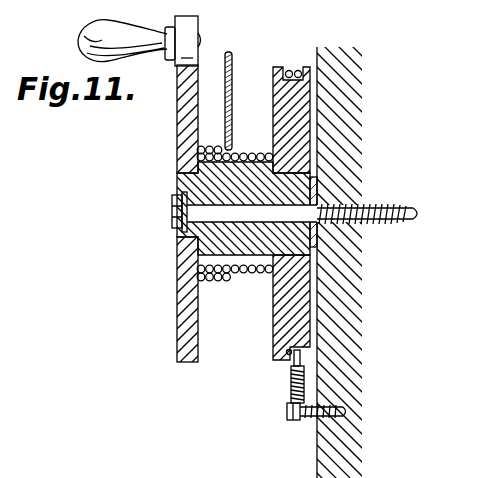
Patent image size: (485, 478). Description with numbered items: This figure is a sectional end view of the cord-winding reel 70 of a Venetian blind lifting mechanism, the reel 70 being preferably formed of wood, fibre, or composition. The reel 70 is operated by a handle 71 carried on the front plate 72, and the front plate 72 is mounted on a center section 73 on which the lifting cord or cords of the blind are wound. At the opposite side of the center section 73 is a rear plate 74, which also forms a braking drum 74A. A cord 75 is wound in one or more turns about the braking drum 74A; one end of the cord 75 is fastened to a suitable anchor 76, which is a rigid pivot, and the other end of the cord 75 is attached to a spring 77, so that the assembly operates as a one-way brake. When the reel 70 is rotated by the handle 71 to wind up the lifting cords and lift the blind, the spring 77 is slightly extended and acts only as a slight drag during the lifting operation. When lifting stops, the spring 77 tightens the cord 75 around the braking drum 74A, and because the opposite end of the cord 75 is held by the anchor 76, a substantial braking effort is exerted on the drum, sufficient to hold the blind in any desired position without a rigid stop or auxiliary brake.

The reel 70 is at (178, 117).
The handle 71 is at (93, 31).
The front plate 72 is at (182, 296).
The center section 73 is at (200, 240).
The rear plate 74 is at (300, 63).
The braking drum 74A is at (305, 37).
The cord 75 is at (291, 369).
The anchor 76 is at (291, 420).
The spring 77 is at (289, 399).